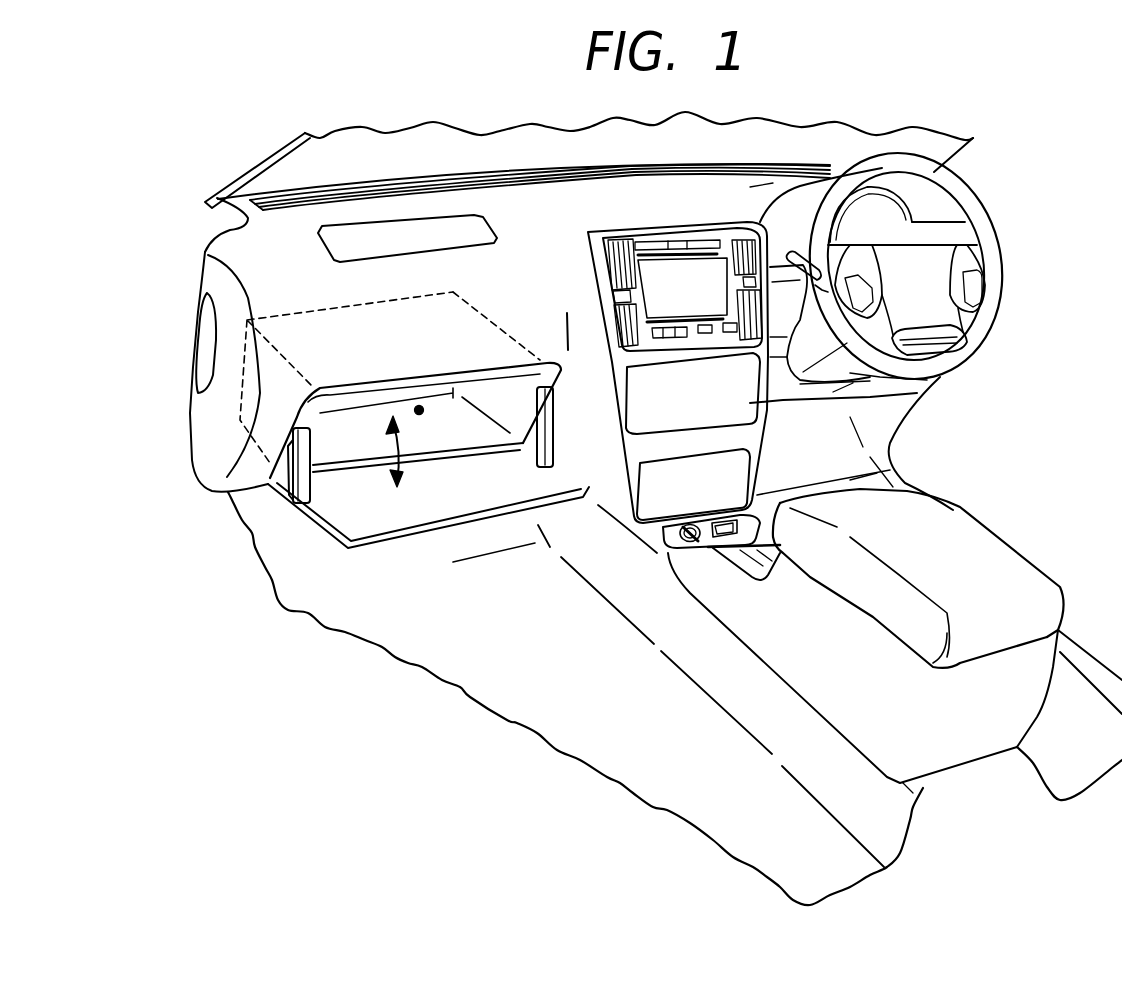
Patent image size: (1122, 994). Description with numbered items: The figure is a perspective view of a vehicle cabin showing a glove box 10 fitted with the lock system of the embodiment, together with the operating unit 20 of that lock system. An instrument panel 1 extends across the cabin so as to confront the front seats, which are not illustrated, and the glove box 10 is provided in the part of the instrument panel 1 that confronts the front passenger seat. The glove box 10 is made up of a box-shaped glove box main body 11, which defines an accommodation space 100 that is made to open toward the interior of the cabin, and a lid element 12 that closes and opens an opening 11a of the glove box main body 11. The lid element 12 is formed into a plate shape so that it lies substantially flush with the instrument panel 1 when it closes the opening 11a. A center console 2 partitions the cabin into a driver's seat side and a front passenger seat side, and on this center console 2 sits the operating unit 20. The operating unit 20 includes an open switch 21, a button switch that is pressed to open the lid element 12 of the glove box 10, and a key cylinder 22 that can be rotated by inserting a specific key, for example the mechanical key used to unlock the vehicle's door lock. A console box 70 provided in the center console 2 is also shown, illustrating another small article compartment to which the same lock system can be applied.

The instrument panel 1 is at (203, 443).
The center console 2 is at (753, 512).
The glove box 10 is at (428, 468).
The glove box main body 11 is at (475, 310).
The opening 11a is at (510, 380).
The lid element 12 is at (403, 535).
The operating unit 20 is at (685, 529).
The open switch 21 is at (722, 520).
The key cylinder 22 is at (686, 527).
The console box 70 is at (995, 537).
The accommodation space 100 is at (420, 409).